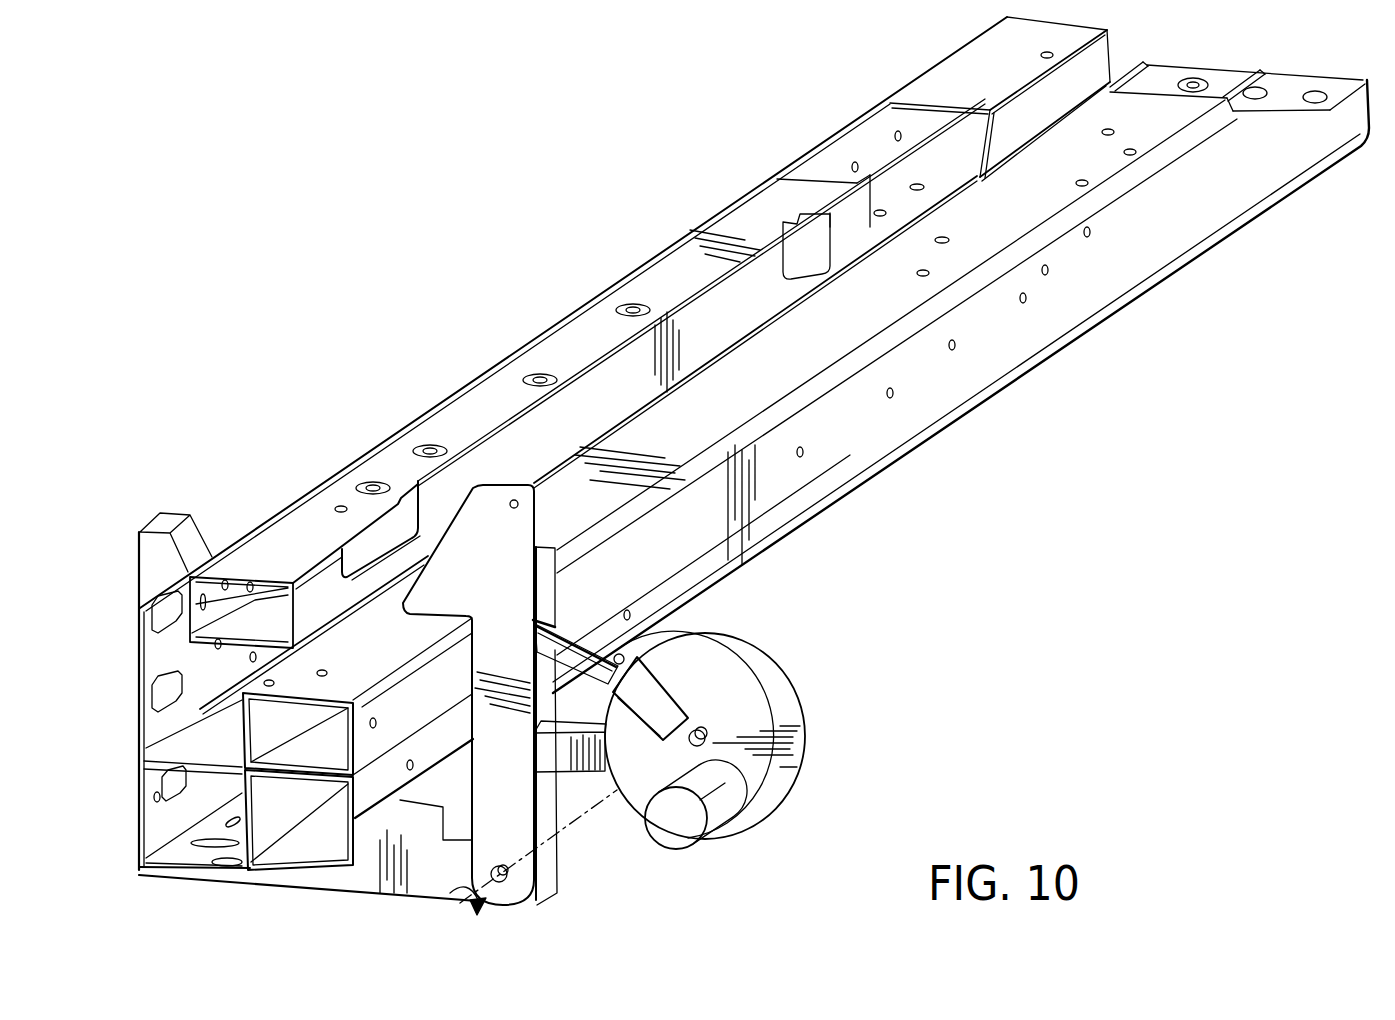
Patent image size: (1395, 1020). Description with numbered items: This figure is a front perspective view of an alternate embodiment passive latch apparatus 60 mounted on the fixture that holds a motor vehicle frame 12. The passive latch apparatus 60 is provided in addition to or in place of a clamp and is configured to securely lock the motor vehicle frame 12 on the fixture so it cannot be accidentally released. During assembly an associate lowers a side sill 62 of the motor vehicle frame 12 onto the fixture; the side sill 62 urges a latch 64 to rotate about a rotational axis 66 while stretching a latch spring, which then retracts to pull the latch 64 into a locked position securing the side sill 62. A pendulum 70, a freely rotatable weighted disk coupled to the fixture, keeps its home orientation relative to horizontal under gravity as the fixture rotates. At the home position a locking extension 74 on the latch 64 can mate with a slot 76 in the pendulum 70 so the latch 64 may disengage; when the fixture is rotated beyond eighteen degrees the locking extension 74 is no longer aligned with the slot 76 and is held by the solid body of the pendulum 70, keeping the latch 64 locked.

The motor vehicle frame 12 is at (900, 92).
The passive latch apparatus 60 is at (779, 815).
The side sill 62 is at (770, 377).
The latch 64 is at (495, 818).
The rotational axis 66 is at (462, 913).
The pendulum 70 is at (782, 768).
The locking extension 74 is at (607, 650).
The slot 76 is at (655, 705).